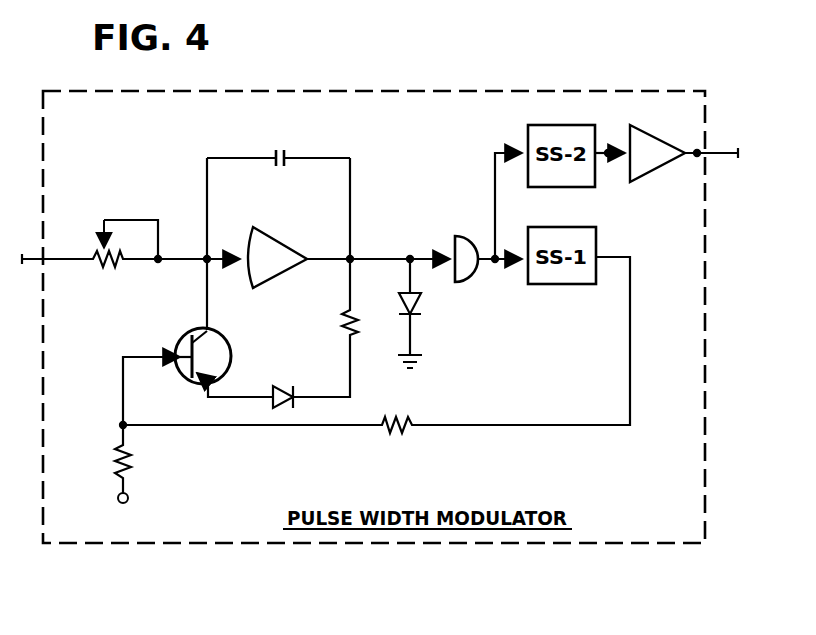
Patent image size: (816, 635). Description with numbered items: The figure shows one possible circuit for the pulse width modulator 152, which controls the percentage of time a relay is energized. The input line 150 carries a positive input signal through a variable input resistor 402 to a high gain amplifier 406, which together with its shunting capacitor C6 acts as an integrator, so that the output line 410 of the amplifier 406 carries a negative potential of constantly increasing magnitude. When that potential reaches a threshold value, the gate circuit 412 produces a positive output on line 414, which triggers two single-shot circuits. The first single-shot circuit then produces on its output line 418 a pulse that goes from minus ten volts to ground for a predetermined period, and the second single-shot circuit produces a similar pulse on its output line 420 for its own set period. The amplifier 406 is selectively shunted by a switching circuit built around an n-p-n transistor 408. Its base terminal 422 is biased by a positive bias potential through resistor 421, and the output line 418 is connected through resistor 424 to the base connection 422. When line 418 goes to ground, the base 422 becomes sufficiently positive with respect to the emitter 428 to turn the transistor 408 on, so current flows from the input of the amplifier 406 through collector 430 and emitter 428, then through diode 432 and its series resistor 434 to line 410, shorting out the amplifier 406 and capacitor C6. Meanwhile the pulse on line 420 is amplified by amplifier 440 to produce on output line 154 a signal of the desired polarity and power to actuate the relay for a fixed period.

The input line 150 is at (64, 254).
The pulse width modulator 152 is at (393, 89).
The output line 154 is at (692, 160).
The variable input resistor 402 is at (104, 263).
The high gain amplifier 406 is at (285, 245).
The transistor 408 is at (231, 348).
The output line of amplifier 410 is at (387, 254).
The gate circuit 412 is at (468, 232).
The output line of gate circuit 414 is at (488, 265).
The output line of single-shot circuit SS-1 418 is at (627, 336).
The output line of single-shot circuit SS-2 420 is at (612, 160).
The resistor 421 is at (130, 462).
The base terminal 422 is at (176, 346).
The resistor 424 is at (397, 430).
The emitter 428 is at (196, 381).
The collector 430 is at (197, 333).
The diode 432 is at (285, 386).
The series resistor 434 is at (347, 320).
The amplifier 440 is at (662, 140).
The shunting capacitor C6 is at (281, 147).